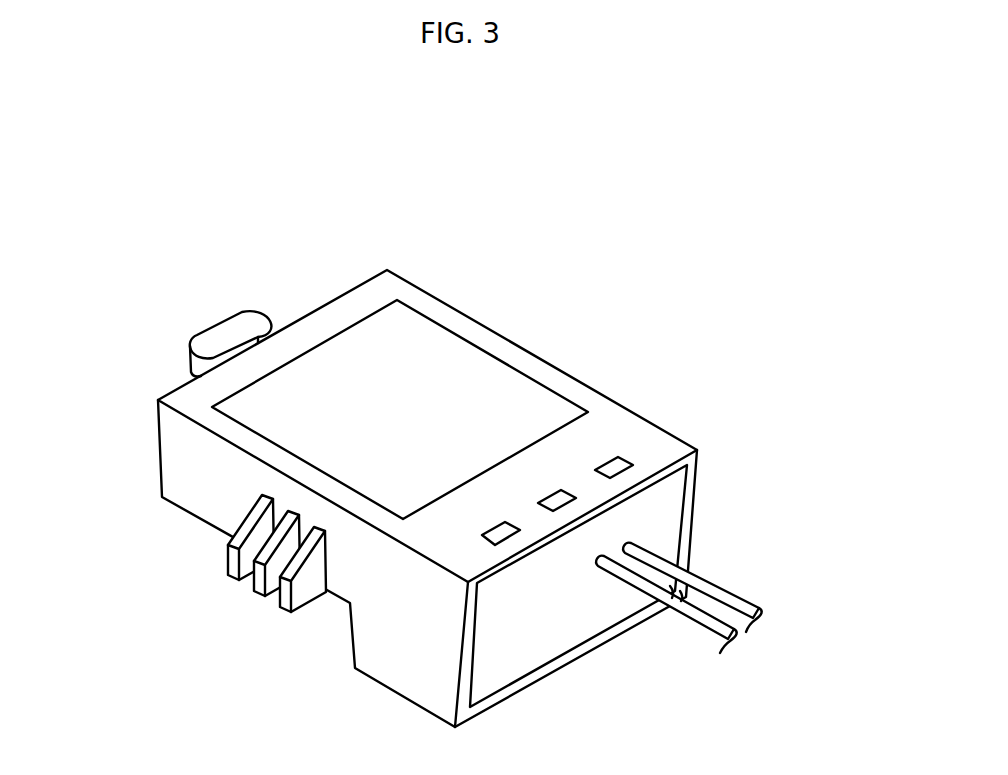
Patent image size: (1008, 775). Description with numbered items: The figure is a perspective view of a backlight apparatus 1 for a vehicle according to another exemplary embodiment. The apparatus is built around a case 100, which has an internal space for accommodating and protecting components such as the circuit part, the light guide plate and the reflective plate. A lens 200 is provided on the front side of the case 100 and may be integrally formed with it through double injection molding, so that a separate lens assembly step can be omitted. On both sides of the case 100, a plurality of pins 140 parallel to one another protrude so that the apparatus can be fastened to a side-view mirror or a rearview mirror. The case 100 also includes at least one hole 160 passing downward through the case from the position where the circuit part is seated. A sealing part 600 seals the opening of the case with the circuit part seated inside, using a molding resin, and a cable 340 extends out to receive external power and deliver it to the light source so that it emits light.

The backlight apparatus for vehicle 1 is at (235, 168).
The case 100 is at (388, 288).
The lens 200 is at (472, 380).
The hole 160 is at (615, 457).
The sealing part 600 is at (663, 502).
The cable 340 is at (717, 597).
The pins 140 is at (233, 562).